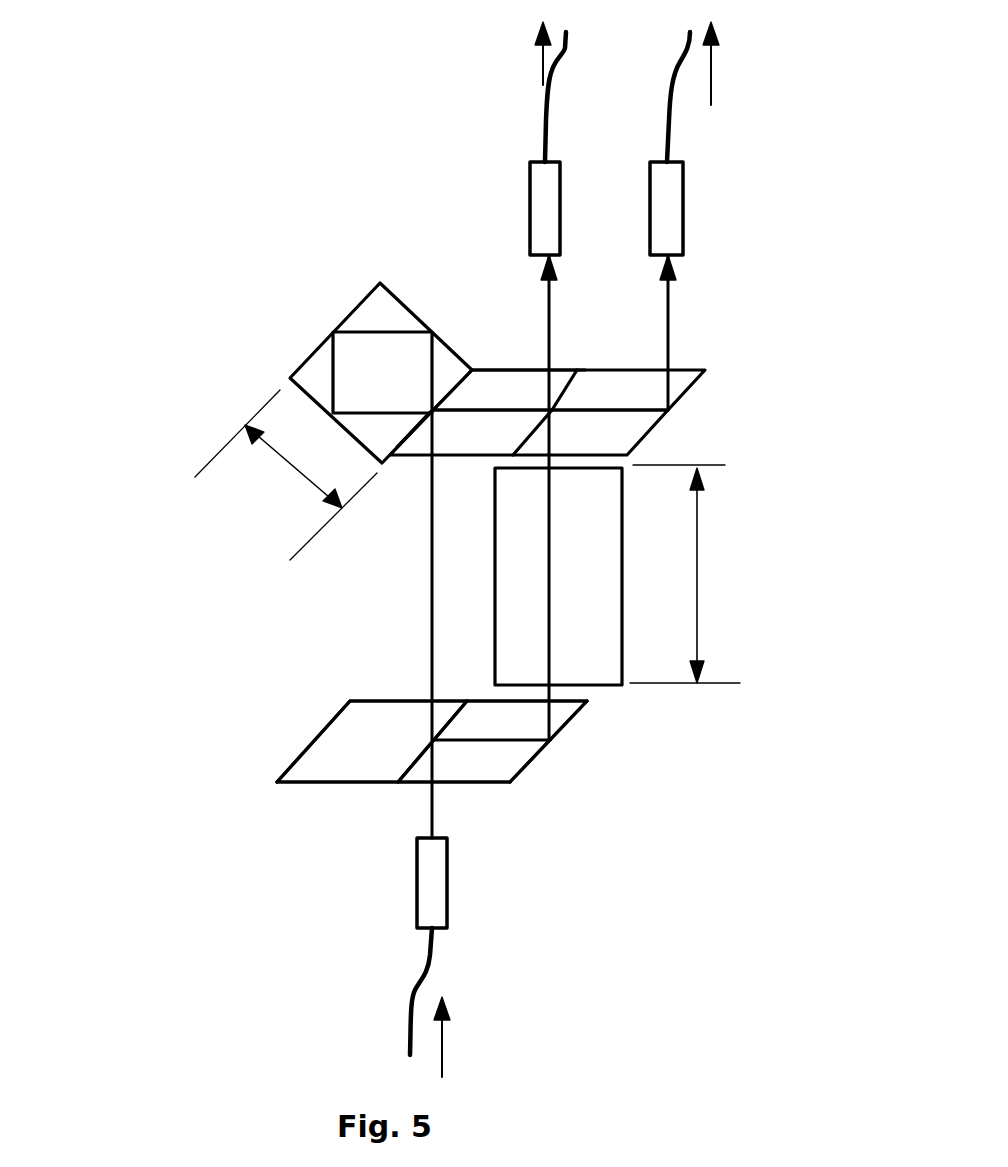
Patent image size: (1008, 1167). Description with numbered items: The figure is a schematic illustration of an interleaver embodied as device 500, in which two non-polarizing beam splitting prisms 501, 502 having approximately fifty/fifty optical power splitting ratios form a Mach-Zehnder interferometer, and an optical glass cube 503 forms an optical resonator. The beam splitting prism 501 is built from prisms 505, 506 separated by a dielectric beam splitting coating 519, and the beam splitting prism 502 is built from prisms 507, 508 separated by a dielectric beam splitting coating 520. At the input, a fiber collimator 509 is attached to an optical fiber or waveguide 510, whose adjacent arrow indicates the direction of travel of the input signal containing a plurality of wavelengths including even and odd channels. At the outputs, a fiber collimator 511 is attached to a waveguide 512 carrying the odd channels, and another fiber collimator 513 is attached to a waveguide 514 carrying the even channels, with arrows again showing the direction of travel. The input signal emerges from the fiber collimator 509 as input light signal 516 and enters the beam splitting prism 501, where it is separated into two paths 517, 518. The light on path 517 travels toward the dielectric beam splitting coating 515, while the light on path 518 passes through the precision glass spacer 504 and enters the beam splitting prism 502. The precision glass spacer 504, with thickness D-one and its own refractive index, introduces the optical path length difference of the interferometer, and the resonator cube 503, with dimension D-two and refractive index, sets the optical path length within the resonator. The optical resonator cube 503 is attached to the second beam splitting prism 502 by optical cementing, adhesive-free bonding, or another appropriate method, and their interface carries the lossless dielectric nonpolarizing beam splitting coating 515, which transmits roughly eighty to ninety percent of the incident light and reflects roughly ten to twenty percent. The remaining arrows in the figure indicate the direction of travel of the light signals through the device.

The device 500 is at (315, 114).
The beam splitting prism 501 is at (520, 770).
The beam splitting prism 502 is at (650, 430).
The optical glass cube 503 is at (355, 305).
The precision glass spacer 504 is at (615, 690).
The prism 505 is at (313, 782).
The prism 506 is at (498, 786).
The prism 507 is at (510, 366).
The prism 508 is at (703, 380).
The fiber collimator 509 is at (415, 893).
The optical fiber or waveguide 510 is at (410, 1012).
The fiber collimator 511 is at (530, 197).
The optical fiber or waveguide 512 is at (545, 118).
The fiber collimator 513 is at (683, 212).
The optical fiber or waveguide 514 is at (670, 130).
The dielectric nonpolarizing beam splitting coating 515 is at (418, 442).
The input light signal 516 is at (430, 803).
The path 517 is at (432, 648).
The path 518 is at (595, 693).
The dielectric beam splitting coating 519 is at (398, 760).
The dielectric beam splitting coating 520 is at (562, 370).